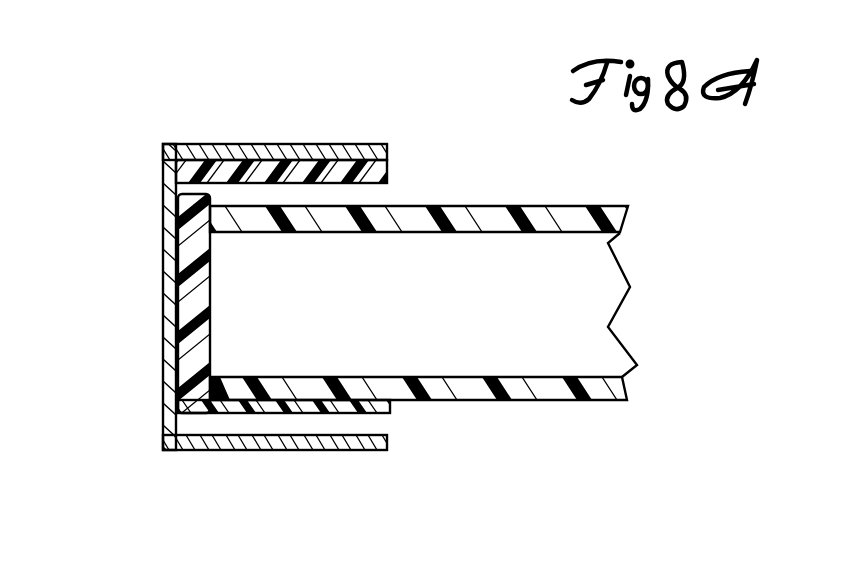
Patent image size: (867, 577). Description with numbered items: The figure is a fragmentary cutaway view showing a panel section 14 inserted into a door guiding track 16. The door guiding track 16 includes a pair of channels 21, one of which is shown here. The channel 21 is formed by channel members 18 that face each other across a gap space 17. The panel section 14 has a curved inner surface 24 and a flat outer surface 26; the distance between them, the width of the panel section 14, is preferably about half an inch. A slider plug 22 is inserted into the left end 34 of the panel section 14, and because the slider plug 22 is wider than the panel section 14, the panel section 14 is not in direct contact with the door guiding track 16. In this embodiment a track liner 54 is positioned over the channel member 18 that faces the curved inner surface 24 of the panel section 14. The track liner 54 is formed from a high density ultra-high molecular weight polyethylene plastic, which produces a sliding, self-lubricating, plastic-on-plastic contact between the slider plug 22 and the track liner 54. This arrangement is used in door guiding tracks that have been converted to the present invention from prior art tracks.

The panel section 14 is at (413, 322).
The door guiding track 16 is at (329, 295).
The gap space 17 is at (375, 422).
The channel member 18 is at (231, 277).
The channel 21 is at (167, 403).
The slider plug 22 is at (190, 322).
The curved inner surface 24 is at (455, 205).
The flat outer surface 26 is at (535, 400).
The left end 34 is at (227, 263).
The track liner 54 is at (342, 144).